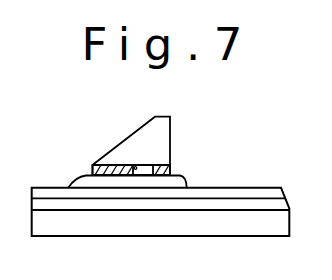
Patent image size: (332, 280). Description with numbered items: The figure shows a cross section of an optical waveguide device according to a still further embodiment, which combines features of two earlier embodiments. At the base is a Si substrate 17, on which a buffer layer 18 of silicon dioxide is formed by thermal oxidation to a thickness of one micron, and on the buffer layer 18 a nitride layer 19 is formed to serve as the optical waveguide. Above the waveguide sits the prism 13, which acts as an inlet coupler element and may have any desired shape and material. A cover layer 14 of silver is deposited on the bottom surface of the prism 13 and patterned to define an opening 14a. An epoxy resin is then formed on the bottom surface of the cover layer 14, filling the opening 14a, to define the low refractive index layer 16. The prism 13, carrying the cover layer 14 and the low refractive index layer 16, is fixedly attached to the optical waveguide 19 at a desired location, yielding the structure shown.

The prism 13 is at (168, 132).
The cover layer 14 is at (171, 168).
The opening 14a is at (133, 165).
The low refractive index layer 16 is at (76, 183).
The Si substrate 17 is at (198, 217).
The buffer layer 18 is at (268, 205).
The nitride layer (optical waveguide) 19 is at (233, 193).